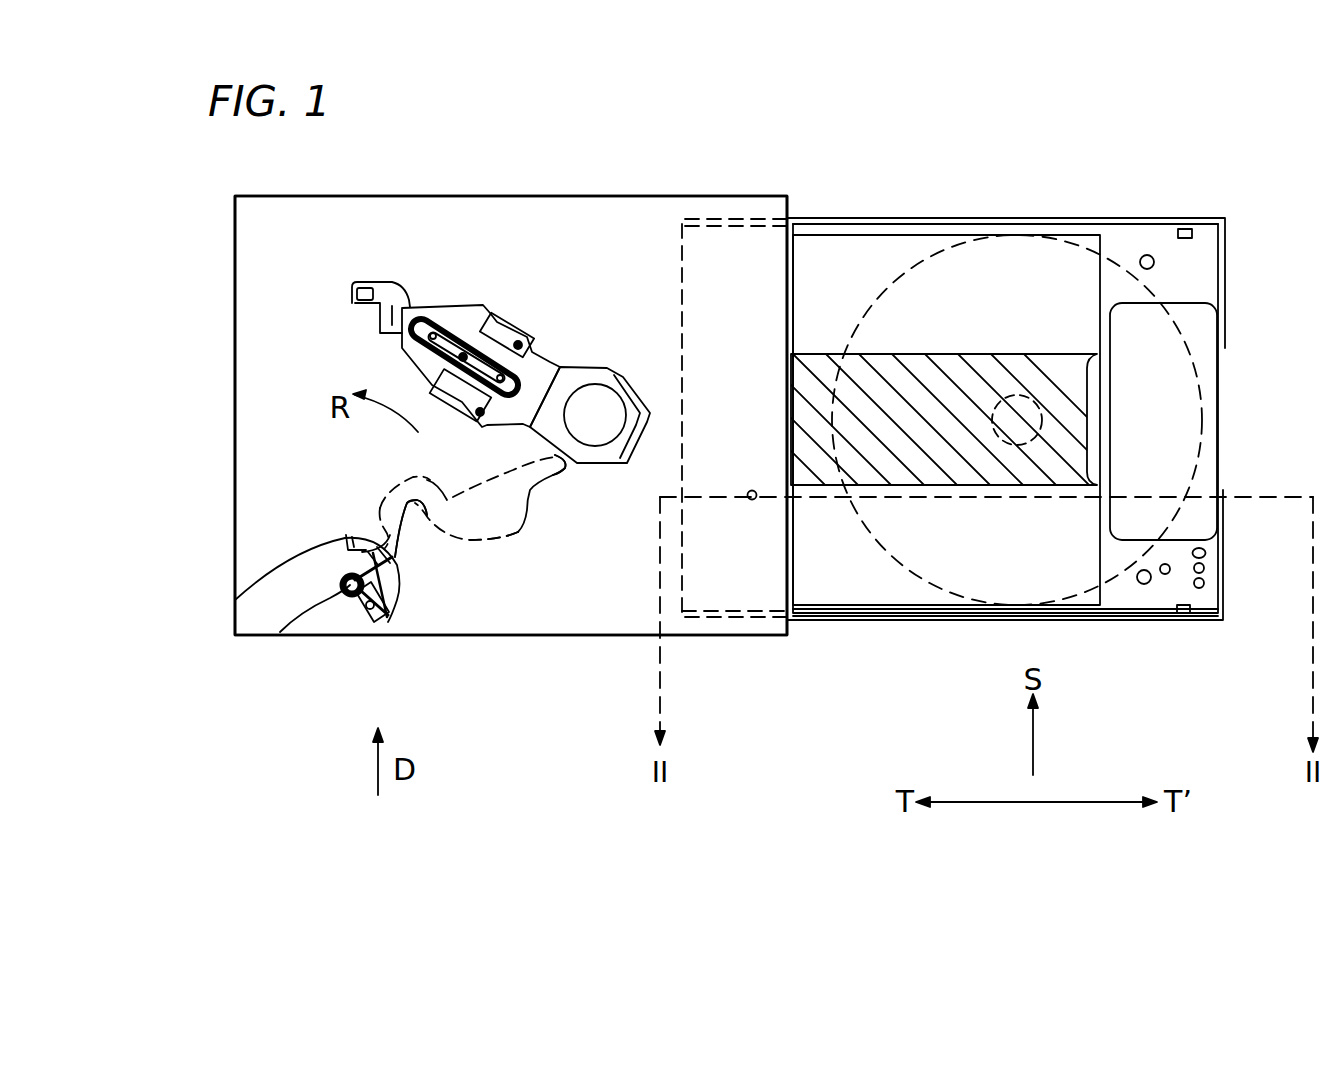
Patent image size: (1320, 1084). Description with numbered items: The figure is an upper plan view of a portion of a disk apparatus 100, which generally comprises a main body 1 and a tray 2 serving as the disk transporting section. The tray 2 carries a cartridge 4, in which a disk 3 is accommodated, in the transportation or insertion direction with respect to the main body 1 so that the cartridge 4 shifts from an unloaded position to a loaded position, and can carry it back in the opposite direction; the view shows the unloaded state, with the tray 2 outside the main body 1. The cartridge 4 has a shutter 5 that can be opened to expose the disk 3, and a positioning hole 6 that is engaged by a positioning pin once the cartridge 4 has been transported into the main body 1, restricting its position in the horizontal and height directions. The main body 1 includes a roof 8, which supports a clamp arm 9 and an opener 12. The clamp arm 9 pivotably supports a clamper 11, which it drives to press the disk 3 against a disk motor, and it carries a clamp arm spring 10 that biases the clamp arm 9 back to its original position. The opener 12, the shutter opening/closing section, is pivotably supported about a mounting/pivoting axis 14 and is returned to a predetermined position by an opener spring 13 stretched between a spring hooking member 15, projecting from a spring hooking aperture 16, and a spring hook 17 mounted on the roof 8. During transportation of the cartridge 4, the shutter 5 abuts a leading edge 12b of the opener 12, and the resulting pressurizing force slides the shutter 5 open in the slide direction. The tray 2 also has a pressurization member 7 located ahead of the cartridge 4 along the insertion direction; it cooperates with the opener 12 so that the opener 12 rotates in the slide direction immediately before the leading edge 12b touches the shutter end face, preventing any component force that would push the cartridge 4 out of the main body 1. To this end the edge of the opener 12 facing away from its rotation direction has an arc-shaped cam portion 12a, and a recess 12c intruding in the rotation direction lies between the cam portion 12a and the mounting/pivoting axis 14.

The disk apparatus 100 is at (1185, 147).
The main body 1 is at (712, 197).
The tray 2 is at (1070, 218).
The disk 3 is at (935, 245).
The cartridge 4 is at (887, 224).
The shutter 5 is at (880, 455).
The positioning hole 6 is at (1150, 256).
The pressurization member 7 is at (752, 502).
The roof 8 is at (286, 238).
The clamp arm 9 is at (405, 307).
The clamp arm spring 10 is at (483, 305).
The clamper 11 is at (603, 398).
The opener 12 is at (453, 520).
The cam portion 12a is at (493, 550).
The leading edge 12b is at (557, 477).
The recess 12c is at (427, 515).
The opener spring 13 is at (357, 593).
The mounting/pivoting axis 14 is at (353, 597).
The spring hooking member 15 is at (388, 618).
The spring hooking aperture 16 is at (235, 600).
The spring hook 17 is at (377, 620).